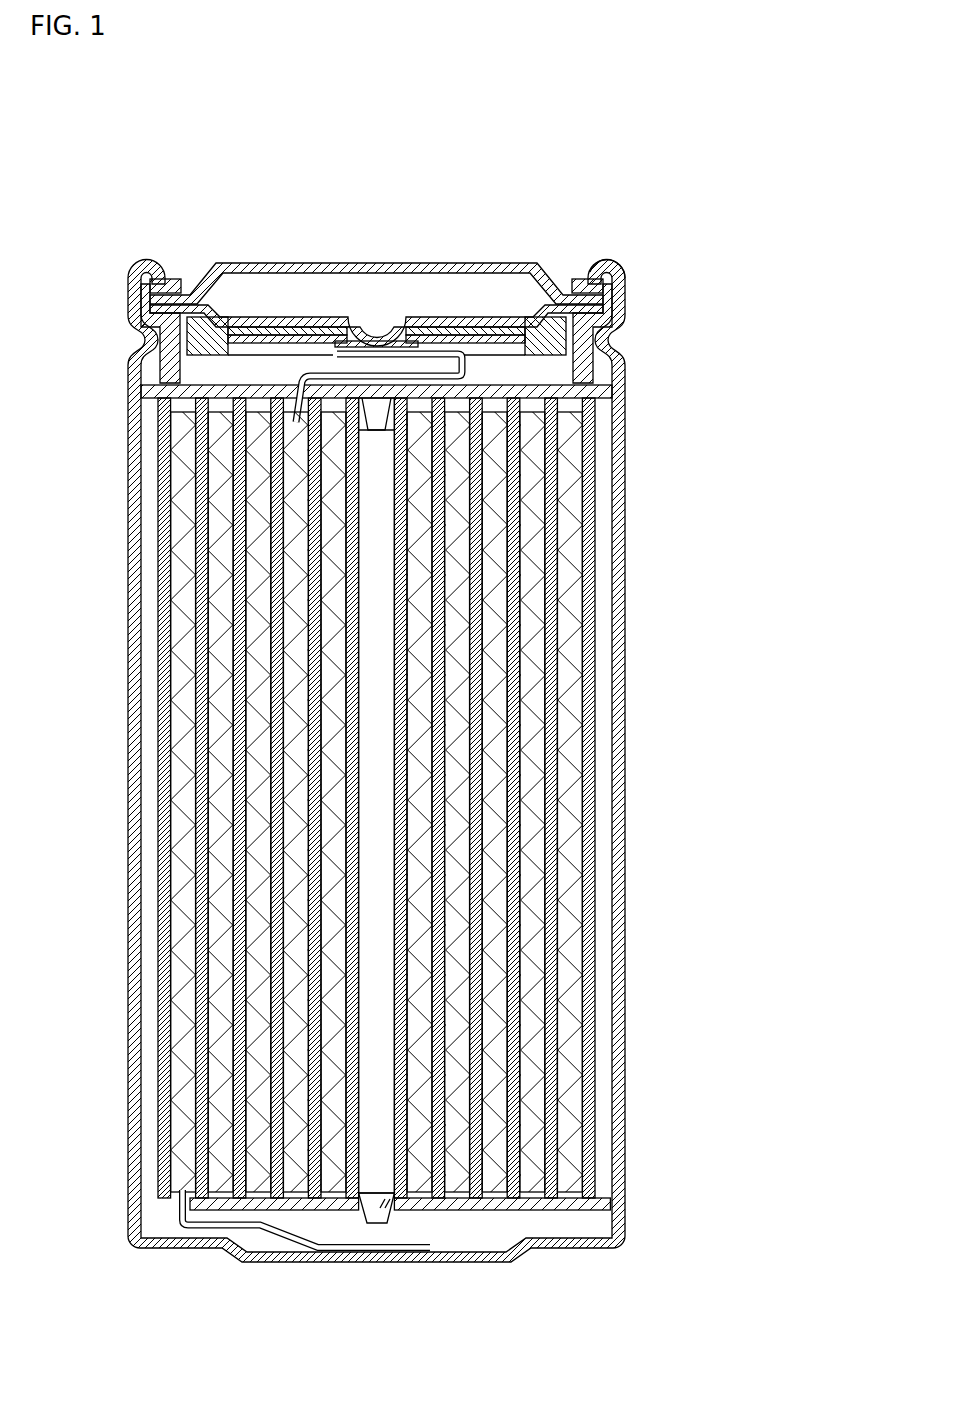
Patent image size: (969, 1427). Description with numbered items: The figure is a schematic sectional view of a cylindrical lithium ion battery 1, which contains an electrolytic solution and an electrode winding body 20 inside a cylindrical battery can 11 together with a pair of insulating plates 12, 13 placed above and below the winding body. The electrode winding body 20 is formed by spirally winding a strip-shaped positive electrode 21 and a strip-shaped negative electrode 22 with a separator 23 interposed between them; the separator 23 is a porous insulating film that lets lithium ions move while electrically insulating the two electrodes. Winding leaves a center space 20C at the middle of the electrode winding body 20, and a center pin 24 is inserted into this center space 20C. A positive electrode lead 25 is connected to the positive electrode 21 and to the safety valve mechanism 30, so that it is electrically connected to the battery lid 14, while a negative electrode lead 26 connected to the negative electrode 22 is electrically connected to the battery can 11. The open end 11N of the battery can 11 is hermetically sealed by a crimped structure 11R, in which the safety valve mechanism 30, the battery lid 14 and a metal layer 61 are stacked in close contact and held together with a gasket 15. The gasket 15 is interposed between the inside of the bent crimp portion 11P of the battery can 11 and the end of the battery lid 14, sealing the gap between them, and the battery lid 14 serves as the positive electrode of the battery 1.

The lithium ion battery 1 is at (386, 147).
The battery can 11 is at (620, 577).
The crimp portion 11P is at (612, 262).
The crimped structure 11R is at (633, 268).
The open end 11N is at (406, 296).
The insulating plate 12 is at (152, 392).
The insulating plate 13 is at (565, 1212).
The battery lid 14 is at (270, 262).
The gasket 15 is at (586, 348).
The electrode winding body 20 is at (416, 852).
The center space 20C is at (392, 1220).
The positive electrode 21 is at (533, 684).
The negative electrode 22 is at (570, 737).
The separator 23 is at (590, 790).
The center pin 24 is at (375, 845).
The positive electrode lead 25 is at (300, 373).
The negative electrode lead 26 is at (200, 1226).
The safety valve mechanism 30 is at (358, 309).
The metal layer 61 is at (186, 279).